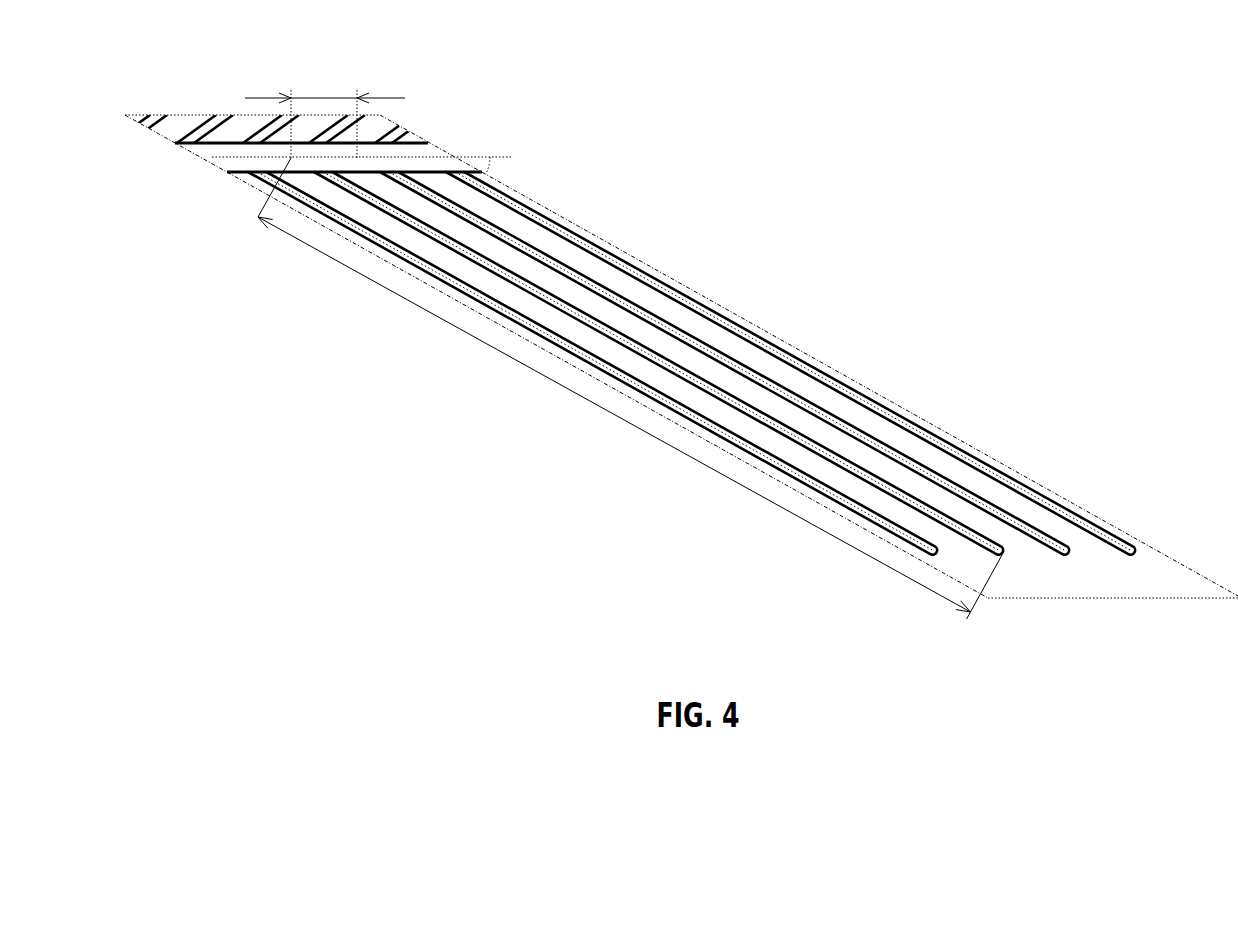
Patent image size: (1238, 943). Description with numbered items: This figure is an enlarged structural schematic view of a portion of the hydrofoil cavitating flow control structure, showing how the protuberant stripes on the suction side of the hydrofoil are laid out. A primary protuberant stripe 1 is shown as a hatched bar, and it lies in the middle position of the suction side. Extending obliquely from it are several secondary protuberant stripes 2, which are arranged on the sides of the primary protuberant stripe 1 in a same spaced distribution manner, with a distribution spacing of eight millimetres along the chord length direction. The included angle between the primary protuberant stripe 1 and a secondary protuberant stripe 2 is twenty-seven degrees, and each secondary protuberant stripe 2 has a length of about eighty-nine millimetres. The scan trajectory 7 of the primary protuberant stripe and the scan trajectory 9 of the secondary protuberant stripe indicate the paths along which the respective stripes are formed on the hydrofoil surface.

The primary protuberant stripe 1 is at (217, 163).
The scan trajectory of the primary protuberant stripe 7 is at (487, 139).
The secondary protuberant stripe 2 is at (691, 329).
The scan trajectory of secondary protuberant stripe 9 is at (872, 416).